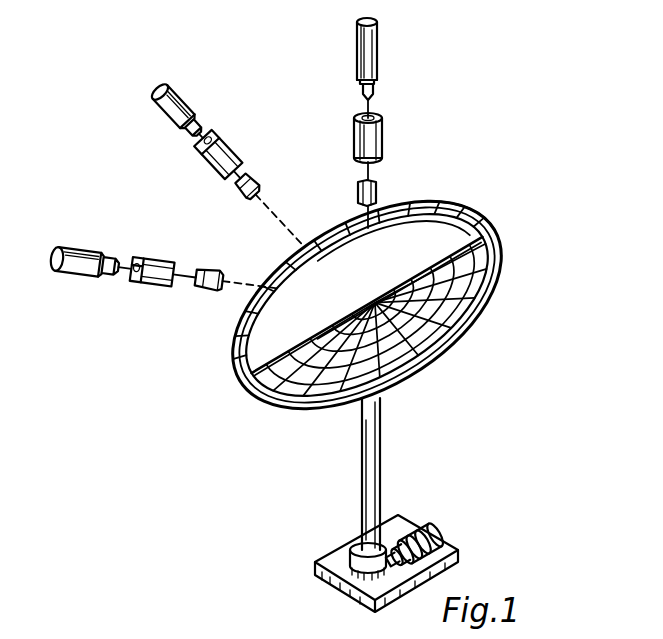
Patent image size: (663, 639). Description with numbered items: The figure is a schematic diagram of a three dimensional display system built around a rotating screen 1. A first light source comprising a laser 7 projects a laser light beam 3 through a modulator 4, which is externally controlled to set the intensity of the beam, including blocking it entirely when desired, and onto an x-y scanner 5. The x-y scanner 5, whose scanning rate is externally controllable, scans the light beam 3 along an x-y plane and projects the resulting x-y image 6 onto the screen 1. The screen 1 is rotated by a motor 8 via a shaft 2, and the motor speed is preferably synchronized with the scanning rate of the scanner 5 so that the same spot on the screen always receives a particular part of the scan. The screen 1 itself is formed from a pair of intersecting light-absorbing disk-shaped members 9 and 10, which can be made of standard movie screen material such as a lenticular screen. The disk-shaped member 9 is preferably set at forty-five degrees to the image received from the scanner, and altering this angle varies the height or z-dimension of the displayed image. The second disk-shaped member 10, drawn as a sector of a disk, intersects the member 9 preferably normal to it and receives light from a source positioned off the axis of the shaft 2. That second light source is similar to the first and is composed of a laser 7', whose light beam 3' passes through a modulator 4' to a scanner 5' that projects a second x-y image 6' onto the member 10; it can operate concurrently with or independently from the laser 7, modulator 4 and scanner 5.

The screen 1 is at (245, 430).
The shaft 2 is at (381, 442).
The laser light beam 3 is at (277, 189).
The light beam 3' is at (157, 144).
The modulator 4 is at (280, 192).
The modulator 4' is at (231, 123).
The x-y scanner 5 is at (314, 207).
The scanner 5' is at (268, 159).
The x-y image 6 is at (348, 224).
The x-y image 6' is at (291, 202).
The laser 7 is at (244, 146).
The laser 7' is at (183, 83).
The motor 8 is at (441, 530).
The disk-shaped member 9 is at (378, 304).
The second disk-shaped member 10 is at (460, 201).